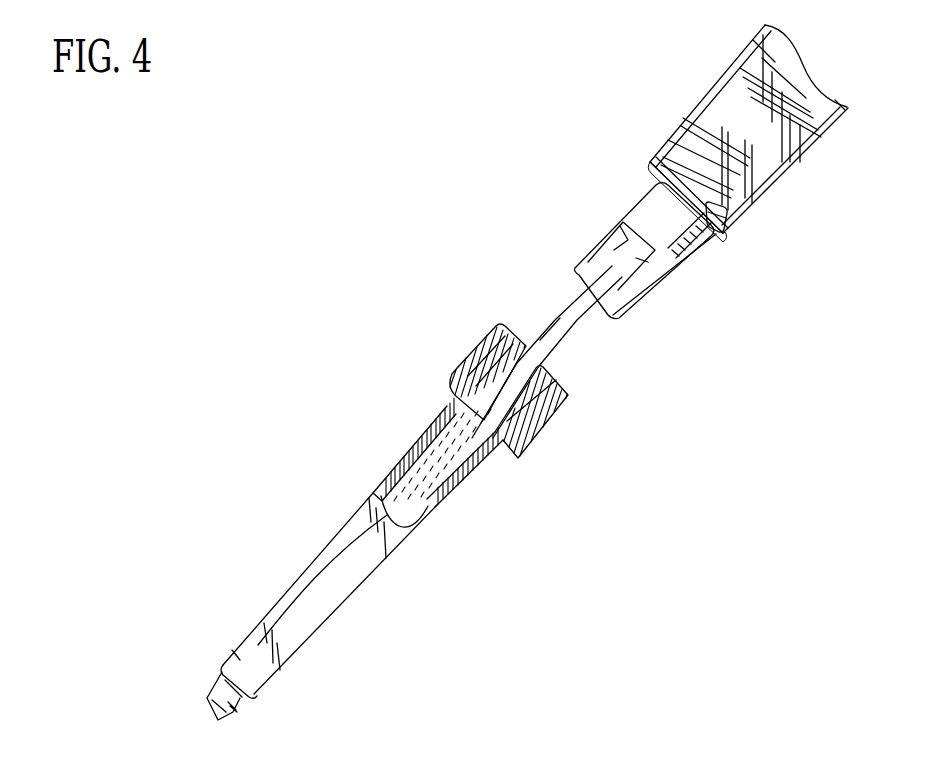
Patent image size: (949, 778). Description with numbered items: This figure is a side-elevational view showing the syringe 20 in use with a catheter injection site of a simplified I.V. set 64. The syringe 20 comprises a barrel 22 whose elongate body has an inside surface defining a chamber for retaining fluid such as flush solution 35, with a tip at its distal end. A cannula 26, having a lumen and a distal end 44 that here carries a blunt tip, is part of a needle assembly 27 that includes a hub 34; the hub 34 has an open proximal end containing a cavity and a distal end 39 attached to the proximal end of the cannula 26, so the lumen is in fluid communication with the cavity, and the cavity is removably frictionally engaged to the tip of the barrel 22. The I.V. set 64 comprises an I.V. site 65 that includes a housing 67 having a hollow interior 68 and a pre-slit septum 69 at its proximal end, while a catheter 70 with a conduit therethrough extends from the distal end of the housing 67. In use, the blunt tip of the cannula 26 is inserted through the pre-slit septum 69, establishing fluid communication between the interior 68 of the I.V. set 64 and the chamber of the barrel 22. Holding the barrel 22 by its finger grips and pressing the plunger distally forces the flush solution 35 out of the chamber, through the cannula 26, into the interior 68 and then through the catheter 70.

The syringe 20 is at (700, 84).
The barrel 22 is at (800, 156).
The cannula 26 is at (565, 325).
The needle assembly 27 is at (633, 206).
The hub 34 is at (685, 226).
The flush solution 35 is at (770, 143).
The distal end 39 is at (637, 313).
The distal end 44 is at (463, 432).
The I.V. set 64 is at (252, 612).
The I.V. site 65 is at (477, 471).
The housing 67 is at (355, 515).
The hollow interior 68 is at (420, 472).
The septum 69 is at (534, 373).
The catheter 70 is at (218, 688).